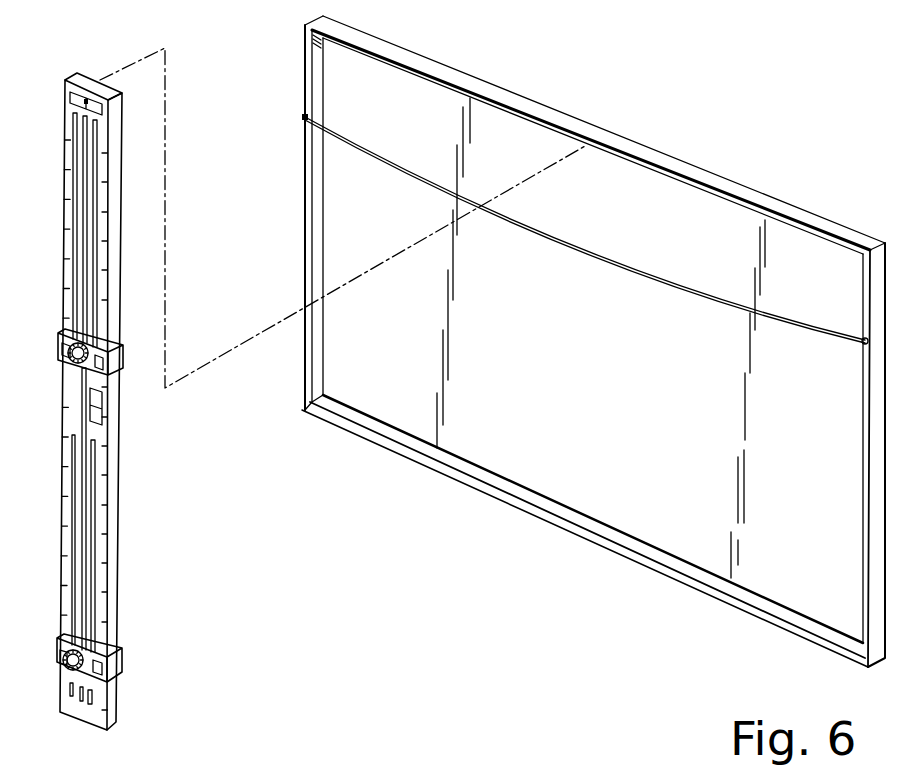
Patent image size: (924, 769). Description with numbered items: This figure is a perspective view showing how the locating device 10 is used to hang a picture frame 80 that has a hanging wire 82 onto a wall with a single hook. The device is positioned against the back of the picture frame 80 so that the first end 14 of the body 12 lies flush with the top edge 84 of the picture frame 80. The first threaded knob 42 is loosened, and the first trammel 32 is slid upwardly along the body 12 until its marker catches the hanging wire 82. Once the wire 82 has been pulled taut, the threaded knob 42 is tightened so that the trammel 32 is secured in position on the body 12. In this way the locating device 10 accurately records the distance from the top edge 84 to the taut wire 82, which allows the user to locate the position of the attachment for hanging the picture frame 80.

The locating device 10 is at (147, 532).
The body 12 is at (68, 410).
The first end 14 is at (82, 80).
The first trammel 32 is at (116, 363).
The first threaded knob 42 is at (64, 352).
The picture frame 80 is at (552, 367).
The hanging wire 82 is at (655, 279).
The top edge 84 is at (594, 130).